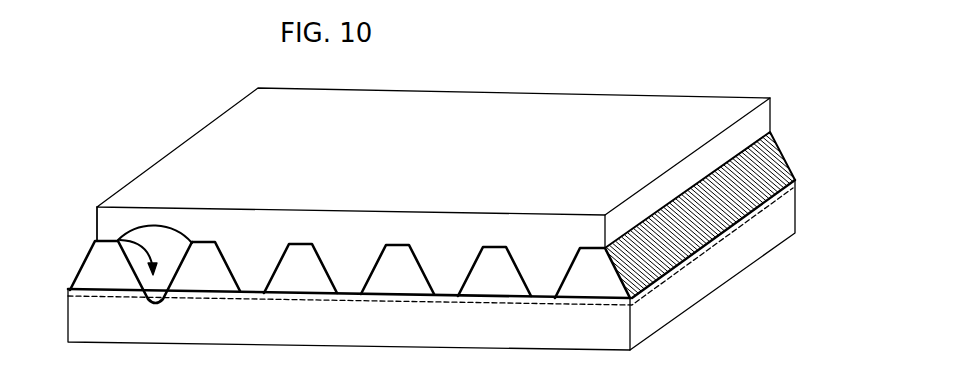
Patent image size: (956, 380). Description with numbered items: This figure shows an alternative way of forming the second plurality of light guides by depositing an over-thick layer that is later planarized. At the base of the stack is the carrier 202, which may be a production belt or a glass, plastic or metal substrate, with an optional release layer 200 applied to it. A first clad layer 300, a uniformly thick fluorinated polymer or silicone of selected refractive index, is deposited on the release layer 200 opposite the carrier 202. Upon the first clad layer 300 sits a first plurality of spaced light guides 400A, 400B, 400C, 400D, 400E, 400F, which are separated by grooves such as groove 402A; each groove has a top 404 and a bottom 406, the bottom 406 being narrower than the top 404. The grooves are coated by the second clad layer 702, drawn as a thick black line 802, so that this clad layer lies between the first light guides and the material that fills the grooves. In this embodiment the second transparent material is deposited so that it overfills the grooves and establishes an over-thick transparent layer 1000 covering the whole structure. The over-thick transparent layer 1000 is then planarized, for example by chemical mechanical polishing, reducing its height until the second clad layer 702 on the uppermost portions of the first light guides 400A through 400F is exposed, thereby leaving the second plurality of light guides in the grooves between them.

The over-thick transparent layer 1000 is at (447, 171).
The second clad layer 702 is at (757, 170).
The release layer 200 is at (648, 292).
The carrier 202 is at (357, 339).
The first clad layer 300 is at (493, 300).
The light guide 400A is at (125, 281).
The light guide 400B is at (223, 282).
The light guide 400C is at (320, 284).
The light guide 400D is at (417, 285).
The light guide 400E is at (513, 287).
The light guide 400F is at (609, 289).
The groove 402A is at (118, 240).
The top 404 is at (157, 224).
The bottom 406 is at (155, 304).
The thick black line 802 is at (281, 264).